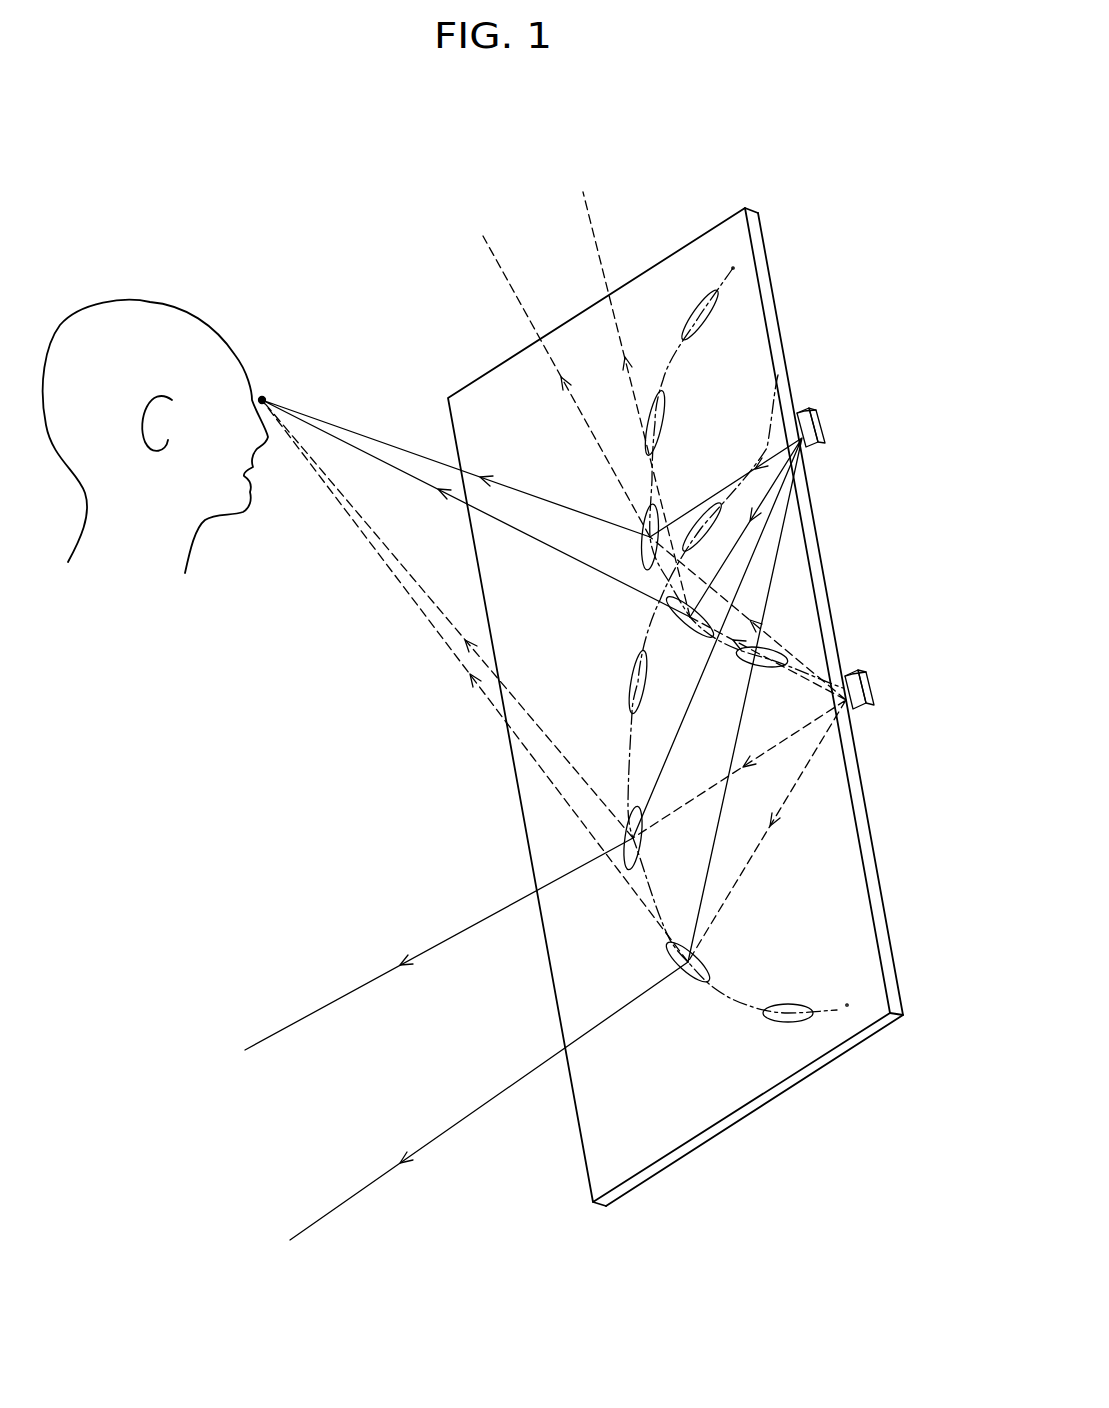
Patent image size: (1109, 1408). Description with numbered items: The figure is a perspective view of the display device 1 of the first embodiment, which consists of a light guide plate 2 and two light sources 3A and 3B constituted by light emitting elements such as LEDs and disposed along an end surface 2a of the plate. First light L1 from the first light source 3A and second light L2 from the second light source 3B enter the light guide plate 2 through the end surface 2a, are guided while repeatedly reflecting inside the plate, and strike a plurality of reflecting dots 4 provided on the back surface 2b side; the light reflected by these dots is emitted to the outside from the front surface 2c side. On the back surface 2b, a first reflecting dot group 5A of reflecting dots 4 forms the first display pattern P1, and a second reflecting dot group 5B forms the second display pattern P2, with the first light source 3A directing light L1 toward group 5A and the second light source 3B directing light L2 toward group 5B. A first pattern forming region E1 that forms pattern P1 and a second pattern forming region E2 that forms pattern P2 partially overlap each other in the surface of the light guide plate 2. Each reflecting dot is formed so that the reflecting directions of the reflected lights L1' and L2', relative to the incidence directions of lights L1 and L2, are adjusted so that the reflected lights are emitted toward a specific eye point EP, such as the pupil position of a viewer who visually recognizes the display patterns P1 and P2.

The display device 1 is at (428, 152).
The light guide plate 2 is at (883, 878).
The end surface 2a is at (762, 263).
The back surface 2b is at (772, 293).
The front surface 2c is at (740, 233).
The first light source 3A is at (825, 422).
The second light source 3B is at (870, 688).
The reflecting dots 4 is at (614, 654).
The first reflecting dot group 5A is at (633, 543).
The second reflecting dot group 5B is at (627, 840).
The first pattern forming region E1 is at (733, 268).
The first display pattern P1 is at (733, 268).
The second pattern forming region E2 is at (847, 1005).
The second display pattern P2 is at (847, 1005).
The eye point EP is at (263, 395).
The first light L1 is at (769, 639).
The reflected first light L1' is at (465, 798).
The second light L2 is at (791, 749).
The reflected second light L2' is at (474, 553).